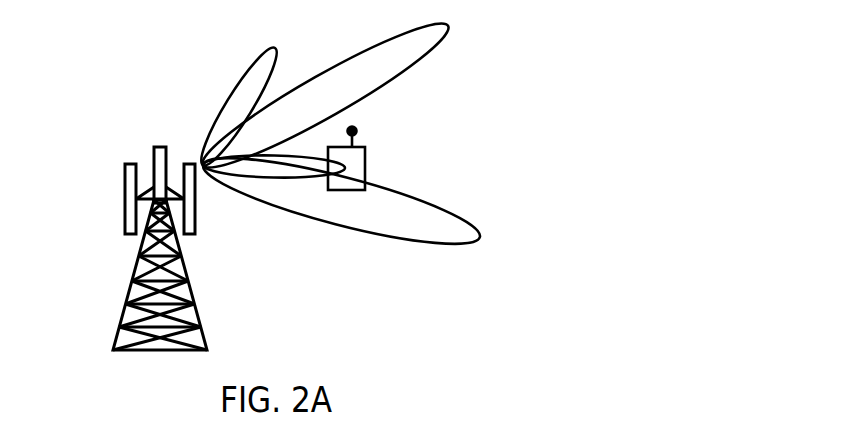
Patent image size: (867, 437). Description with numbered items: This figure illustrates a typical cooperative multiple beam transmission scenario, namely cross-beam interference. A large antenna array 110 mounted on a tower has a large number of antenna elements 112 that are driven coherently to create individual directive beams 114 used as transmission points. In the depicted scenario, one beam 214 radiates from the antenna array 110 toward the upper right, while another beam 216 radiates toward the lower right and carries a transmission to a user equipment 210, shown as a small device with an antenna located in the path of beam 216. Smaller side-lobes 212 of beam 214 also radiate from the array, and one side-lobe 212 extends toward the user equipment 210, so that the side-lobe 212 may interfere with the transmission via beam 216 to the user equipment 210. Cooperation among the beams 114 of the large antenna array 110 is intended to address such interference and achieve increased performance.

The large antenna array 110 is at (120, 323).
The antenna elements 112 is at (108, 183).
The directive beams 114 is at (480, 135).
The user equipment 210 is at (365, 157).
The side-lobes 212 is at (223, 98).
The beam 214 is at (420, 60).
The beam 216 is at (450, 217).